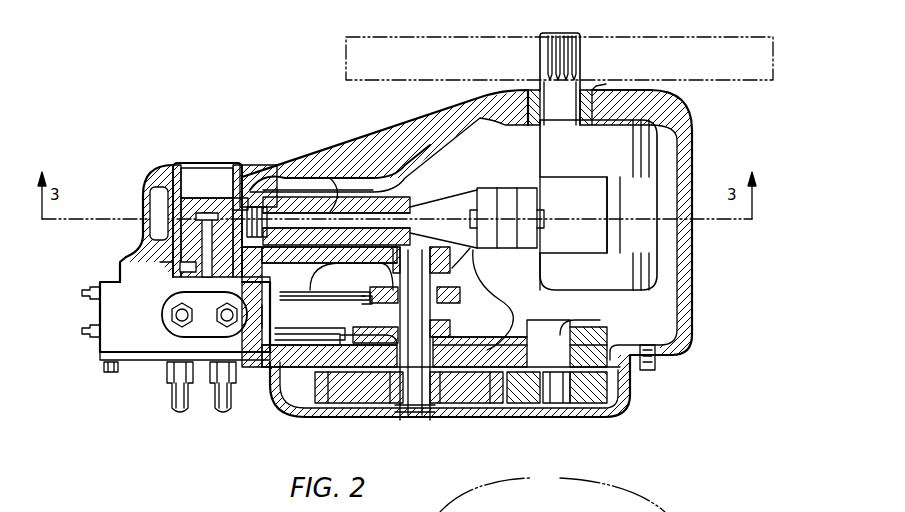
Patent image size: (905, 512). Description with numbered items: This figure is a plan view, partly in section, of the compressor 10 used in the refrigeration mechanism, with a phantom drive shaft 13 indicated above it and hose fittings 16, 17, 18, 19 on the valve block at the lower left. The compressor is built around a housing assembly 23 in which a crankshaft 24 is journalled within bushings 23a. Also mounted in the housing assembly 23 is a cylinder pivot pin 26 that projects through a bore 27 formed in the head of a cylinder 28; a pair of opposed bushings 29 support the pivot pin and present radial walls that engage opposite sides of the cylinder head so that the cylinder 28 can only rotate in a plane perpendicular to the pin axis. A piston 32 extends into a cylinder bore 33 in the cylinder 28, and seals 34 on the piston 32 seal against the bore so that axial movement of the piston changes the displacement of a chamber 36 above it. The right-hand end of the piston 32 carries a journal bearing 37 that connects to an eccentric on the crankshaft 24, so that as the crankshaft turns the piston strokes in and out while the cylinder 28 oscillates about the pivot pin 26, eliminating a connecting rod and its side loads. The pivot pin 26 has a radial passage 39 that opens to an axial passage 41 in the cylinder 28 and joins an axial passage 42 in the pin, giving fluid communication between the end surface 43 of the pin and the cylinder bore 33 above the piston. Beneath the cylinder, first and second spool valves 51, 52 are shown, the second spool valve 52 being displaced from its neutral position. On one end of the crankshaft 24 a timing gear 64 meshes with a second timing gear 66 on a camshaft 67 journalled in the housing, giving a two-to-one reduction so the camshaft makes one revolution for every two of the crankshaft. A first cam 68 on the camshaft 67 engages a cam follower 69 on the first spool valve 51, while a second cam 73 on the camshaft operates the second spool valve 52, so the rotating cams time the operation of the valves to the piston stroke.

The power steering gear assembly 10 is at (300, 424).
The steering shaft (phantom) 13 is at (378, 37).
The fluid port 16 is at (176, 313).
The fluid port 17 is at (232, 323).
The hose fitting 18 is at (236, 398).
The hose fitting 19 is at (172, 404).
The housing assembly 23 is at (690, 142).
The bushings 23a is at (584, 92).
The crankshaft 24 is at (560, 177).
The cylinder pivot pin 26 is at (204, 163).
The bore 27 is at (207, 183).
The cylinder 28 is at (340, 178).
The bushings 29 is at (176, 168).
The piston 32 is at (384, 178).
The cylinder bore 33 is at (368, 212).
The seals 34 is at (298, 197).
The chamber 36 is at (270, 185).
The journal bearing 37 is at (480, 203).
The radial passage 39 is at (236, 205).
The axial passage 41 is at (207, 237).
The axial passage 42 is at (202, 245).
The end surface 43 is at (238, 280).
The first spool valve 51 is at (318, 290).
The second spool valve 52 is at (312, 333).
The timing gear 64 is at (600, 395).
The second timing gear 66 is at (435, 395).
The camshaft 67 is at (437, 268).
The first cam 68 is at (458, 298).
The cam follower 69 is at (370, 302).
The second cam 73 is at (445, 335).